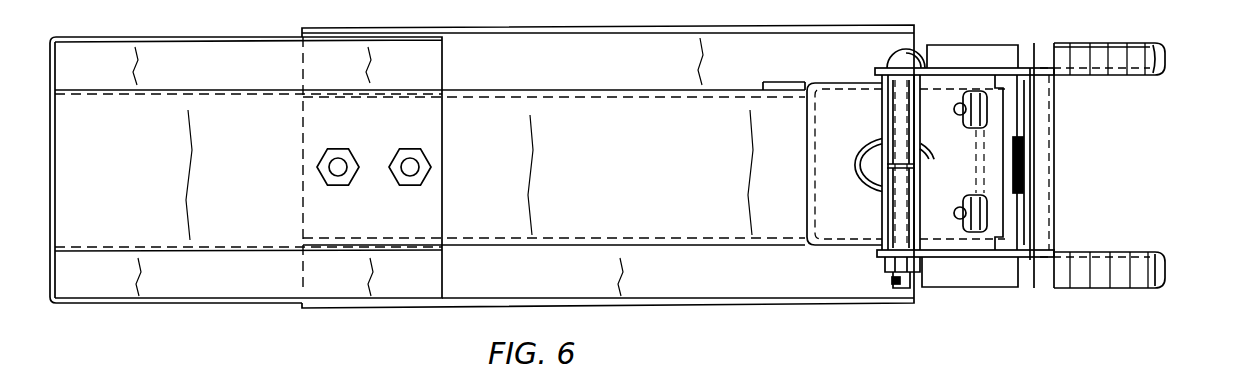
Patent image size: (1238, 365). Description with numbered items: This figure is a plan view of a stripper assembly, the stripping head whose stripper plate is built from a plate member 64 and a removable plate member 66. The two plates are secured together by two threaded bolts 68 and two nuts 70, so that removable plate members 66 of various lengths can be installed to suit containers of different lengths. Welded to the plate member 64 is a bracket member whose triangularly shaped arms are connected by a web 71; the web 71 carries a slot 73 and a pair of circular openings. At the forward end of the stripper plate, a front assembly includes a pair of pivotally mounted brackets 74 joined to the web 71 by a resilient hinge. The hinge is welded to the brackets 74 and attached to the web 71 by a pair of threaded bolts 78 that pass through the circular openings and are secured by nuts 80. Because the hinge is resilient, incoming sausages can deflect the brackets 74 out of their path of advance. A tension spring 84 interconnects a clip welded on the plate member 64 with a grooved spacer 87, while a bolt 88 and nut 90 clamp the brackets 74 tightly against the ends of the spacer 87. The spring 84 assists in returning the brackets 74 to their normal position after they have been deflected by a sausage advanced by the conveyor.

The plate member 64 is at (778, 306).
The removable plate member 66 is at (232, 305).
The threaded bolt 68 is at (335, 176).
The nut 70 is at (318, 168).
The web 71 is at (853, 216).
The slot 73 is at (877, 143).
The pivotally mounted bracket 74 is at (1165, 52).
The threaded bolt 78 is at (953, 105).
The nut 80 is at (983, 92).
The tension spring 84 is at (912, 170).
The grooved spacer 87 is at (882, 215).
The bolt 88 is at (913, 50).
The nut 90 is at (885, 272).